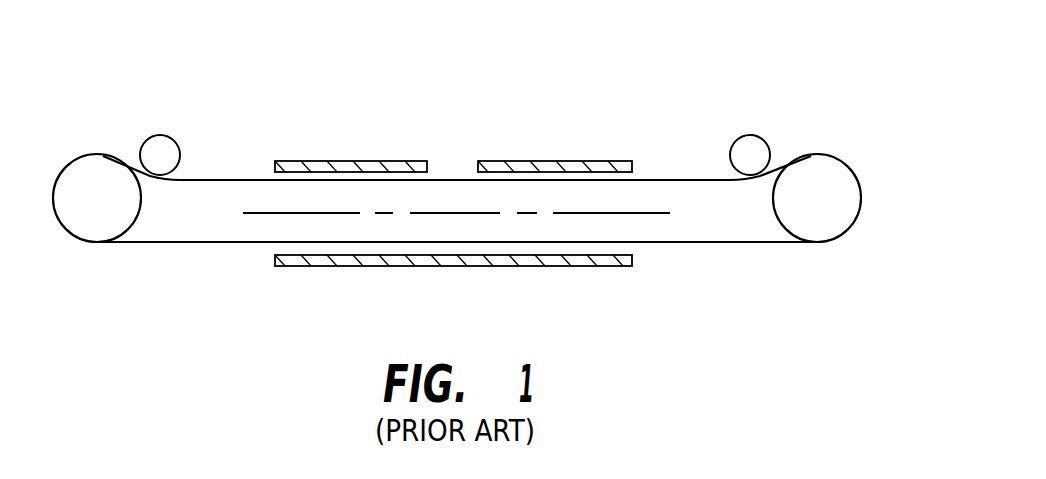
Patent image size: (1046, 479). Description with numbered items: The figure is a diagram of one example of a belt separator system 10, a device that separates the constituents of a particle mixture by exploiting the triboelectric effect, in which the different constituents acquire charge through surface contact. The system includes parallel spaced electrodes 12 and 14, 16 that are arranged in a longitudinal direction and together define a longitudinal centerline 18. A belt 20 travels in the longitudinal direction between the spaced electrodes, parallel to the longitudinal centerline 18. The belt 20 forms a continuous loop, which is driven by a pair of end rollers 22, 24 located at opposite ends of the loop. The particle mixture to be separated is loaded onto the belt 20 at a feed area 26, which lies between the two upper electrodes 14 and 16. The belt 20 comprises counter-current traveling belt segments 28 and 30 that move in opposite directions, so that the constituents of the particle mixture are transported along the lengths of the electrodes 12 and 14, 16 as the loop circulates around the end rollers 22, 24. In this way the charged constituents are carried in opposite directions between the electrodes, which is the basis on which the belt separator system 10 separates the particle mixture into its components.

The belt separator system 10 is at (712, 91).
The electrode 12 is at (538, 266).
The electrode 14 is at (562, 160).
The electrode 16 is at (375, 160).
The longitudinal centerline 18 is at (262, 213).
The belt 20 is at (702, 247).
The end roller 22 is at (838, 158).
The end roller 24 is at (88, 153).
The feed area 26 is at (452, 163).
The counter-current traveling belt segment 28 is at (212, 243).
The counter-current traveling belt segment 30 is at (252, 180).